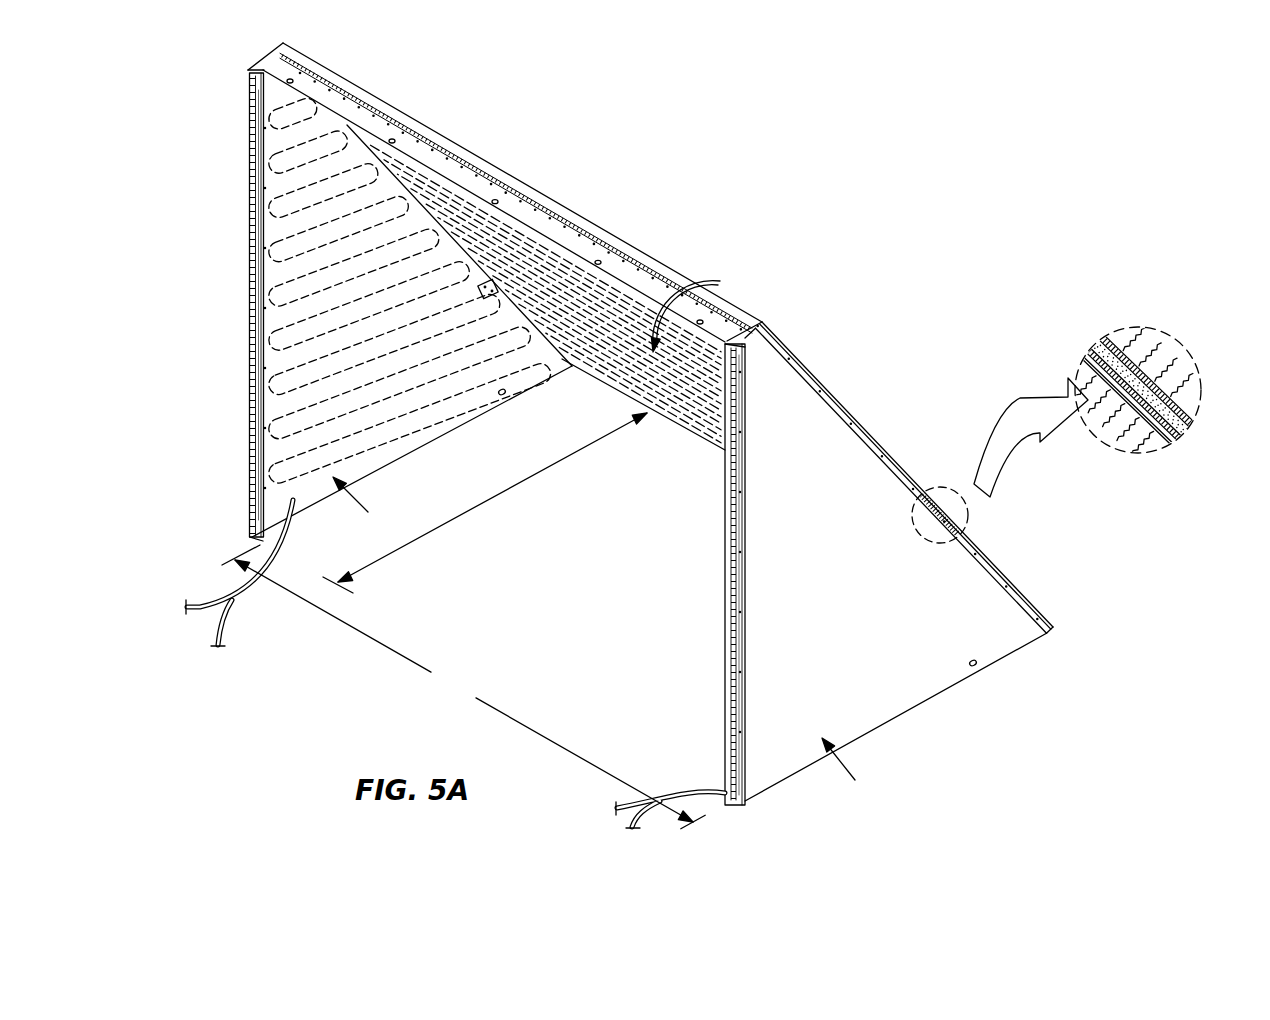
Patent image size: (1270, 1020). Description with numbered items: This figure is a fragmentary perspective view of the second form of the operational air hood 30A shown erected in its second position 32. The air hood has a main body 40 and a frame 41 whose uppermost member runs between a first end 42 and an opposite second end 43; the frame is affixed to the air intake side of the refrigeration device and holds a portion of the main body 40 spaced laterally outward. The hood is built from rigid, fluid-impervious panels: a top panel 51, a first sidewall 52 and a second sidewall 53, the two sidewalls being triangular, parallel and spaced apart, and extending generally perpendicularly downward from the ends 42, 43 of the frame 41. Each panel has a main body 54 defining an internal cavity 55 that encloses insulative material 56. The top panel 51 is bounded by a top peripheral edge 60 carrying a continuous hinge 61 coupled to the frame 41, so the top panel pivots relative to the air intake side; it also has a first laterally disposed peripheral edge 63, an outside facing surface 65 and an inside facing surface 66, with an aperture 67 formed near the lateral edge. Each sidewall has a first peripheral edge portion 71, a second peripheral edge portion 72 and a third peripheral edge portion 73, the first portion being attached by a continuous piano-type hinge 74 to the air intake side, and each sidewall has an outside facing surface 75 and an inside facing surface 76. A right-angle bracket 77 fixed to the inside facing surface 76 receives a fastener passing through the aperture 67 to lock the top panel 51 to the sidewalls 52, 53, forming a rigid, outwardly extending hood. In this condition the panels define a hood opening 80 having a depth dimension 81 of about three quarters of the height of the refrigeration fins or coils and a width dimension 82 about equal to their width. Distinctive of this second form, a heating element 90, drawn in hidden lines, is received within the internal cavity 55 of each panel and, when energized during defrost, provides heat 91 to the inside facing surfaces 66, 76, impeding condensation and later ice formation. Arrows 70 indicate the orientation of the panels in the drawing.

The air hood 30A is at (748, 168).
The main body 40 is at (508, 108).
The frame 41 is at (596, 233).
The first end 42 is at (727, 338).
The second end 43 is at (263, 67).
The top panel 51 is at (610, 352).
The first sidewall 52 is at (851, 598).
The second sidewall 53 is at (371, 322).
The main body 54 is at (812, 460).
The internal cavity 55 is at (1100, 343).
The insulative material 56 is at (1173, 413).
The top peripheral edge 60 is at (625, 240).
The continuous hinge 61 is at (510, 193).
The first laterally disposed peripheral edge 63 is at (895, 470).
The outside facing surface 65 is at (802, 360).
The inside facing surface 66 is at (684, 400).
The aperture 67 is at (567, 243).
The direction arrow 70 is at (606, 638).
The first peripheral edge portion 71 is at (256, 413).
The second peripheral edge portion 72 is at (403, 460).
The third peripheral edge portion 73 is at (413, 200).
The continuous piano-type hinge 74 is at (252, 253).
The outside facing surface 75 is at (920, 680).
The inside facing surface 76 is at (437, 410).
The right-angle bracket 77 is at (490, 280).
The hood opening 80 is at (606, 602).
The depth dimension 81 is at (503, 487).
The width dimension 82 is at (463, 687).
The heating element 90 is at (283, 182).
The heat 91 is at (1087, 365).
The second position 32 is at (925, 470).